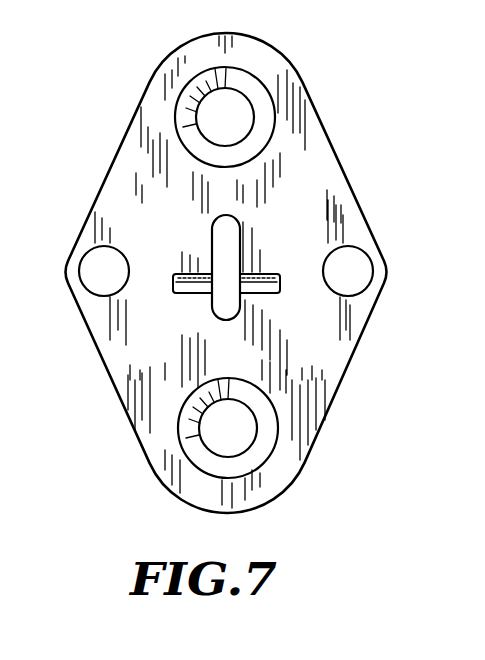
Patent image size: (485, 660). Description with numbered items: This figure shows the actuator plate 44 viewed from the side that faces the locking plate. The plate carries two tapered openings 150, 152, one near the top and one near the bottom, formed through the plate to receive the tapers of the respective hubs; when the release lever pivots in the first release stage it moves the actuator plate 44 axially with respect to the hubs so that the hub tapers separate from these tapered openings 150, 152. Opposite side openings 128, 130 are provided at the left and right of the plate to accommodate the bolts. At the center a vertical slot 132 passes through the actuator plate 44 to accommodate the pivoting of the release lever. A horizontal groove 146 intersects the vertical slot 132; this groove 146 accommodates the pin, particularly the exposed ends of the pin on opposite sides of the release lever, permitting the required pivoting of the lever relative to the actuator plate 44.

The actuator plate 44 is at (127, 160).
The tapered opening 150 is at (255, 88).
The tapered opening 152 is at (260, 448).
The side opening 128 is at (90, 287).
The side opening 130 is at (357, 278).
The vertical slot 132 is at (223, 250).
The horizontal groove 146 is at (264, 278).